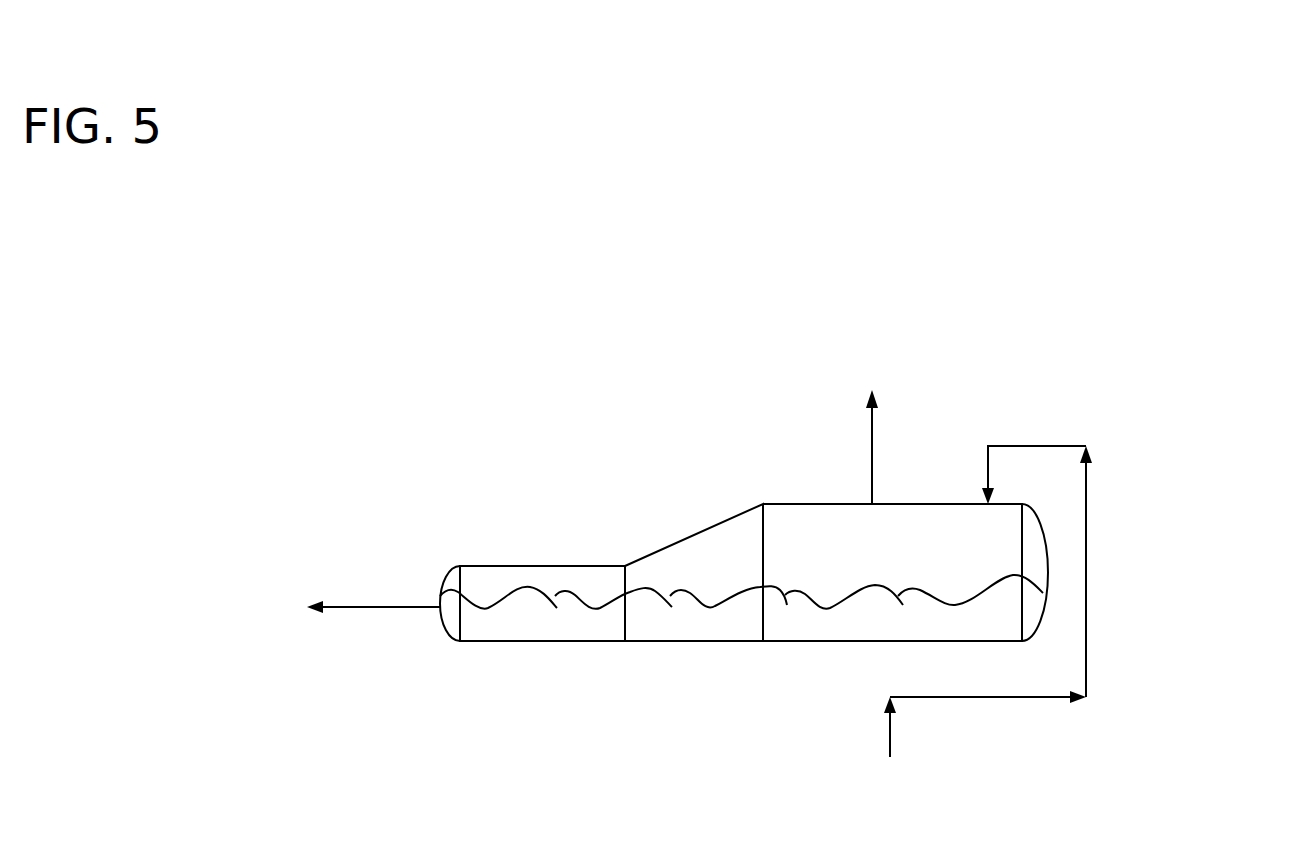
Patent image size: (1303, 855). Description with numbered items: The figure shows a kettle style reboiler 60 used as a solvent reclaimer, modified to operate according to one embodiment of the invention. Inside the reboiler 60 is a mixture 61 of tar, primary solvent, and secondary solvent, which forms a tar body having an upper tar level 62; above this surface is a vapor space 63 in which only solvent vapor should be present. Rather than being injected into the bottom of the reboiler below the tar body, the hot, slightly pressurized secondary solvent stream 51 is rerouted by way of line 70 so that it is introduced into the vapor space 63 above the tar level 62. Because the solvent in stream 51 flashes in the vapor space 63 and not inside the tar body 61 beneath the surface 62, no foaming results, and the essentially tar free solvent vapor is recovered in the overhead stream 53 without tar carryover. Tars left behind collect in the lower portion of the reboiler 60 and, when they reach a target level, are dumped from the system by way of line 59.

The secondary solvent stream 51 is at (890, 729).
The overhead stream 53 is at (872, 450).
The line 59 is at (382, 607).
The kettle style reboiler 60 is at (870, 558).
The mixture of tar and solvent 61 is at (683, 620).
The upper tar level 62 is at (860, 595).
The vapor space 63 is at (735, 533).
The line 70 is at (988, 458).